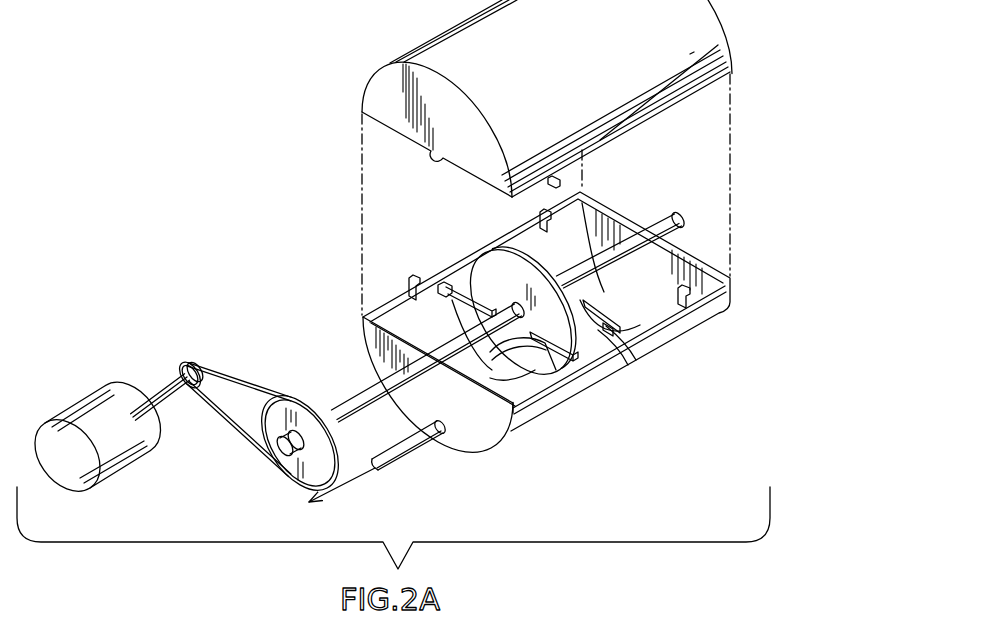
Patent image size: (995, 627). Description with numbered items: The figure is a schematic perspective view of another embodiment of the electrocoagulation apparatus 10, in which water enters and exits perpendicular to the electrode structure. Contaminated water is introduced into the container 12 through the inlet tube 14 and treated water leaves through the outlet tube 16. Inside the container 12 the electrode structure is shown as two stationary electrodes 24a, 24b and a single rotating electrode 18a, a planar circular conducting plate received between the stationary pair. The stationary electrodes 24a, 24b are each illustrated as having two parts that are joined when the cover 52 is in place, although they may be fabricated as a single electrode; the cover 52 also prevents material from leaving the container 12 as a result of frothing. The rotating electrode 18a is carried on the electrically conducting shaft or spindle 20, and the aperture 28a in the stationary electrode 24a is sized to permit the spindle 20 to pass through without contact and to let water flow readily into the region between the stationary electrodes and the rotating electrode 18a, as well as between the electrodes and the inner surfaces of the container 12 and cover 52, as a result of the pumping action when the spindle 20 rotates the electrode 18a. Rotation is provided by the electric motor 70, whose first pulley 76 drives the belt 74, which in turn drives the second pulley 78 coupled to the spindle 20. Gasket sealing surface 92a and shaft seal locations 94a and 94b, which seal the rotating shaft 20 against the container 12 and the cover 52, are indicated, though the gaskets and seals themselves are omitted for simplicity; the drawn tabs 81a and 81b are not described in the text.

The electrocoagulation apparatus 10 is at (229, 215).
The container 12 is at (471, 418).
The inlet port 14 is at (727, 0).
The outlet port 16 is at (413, 461).
The rotating electrode 18a is at (500, 265).
The shaft or spindle 20 is at (611, 247).
The stationary electrode 24a is at (532, 412).
The stationary electrode 24b is at (622, 368).
The aperture 28a is at (556, 377).
The cover 52 is at (594, 66).
The electric motor 70 is at (92, 412).
The belt 74 is at (240, 436).
The first pulley 76 is at (180, 372).
The second pulley 78 is at (283, 405).
The mounting tab 81a is at (458, 283).
The mounting tab 81b is at (597, 337).
The gasket sealing surface 92a is at (388, 305).
The shaft seal 94a is at (438, 356).
The shaft seal 94b is at (658, 228).